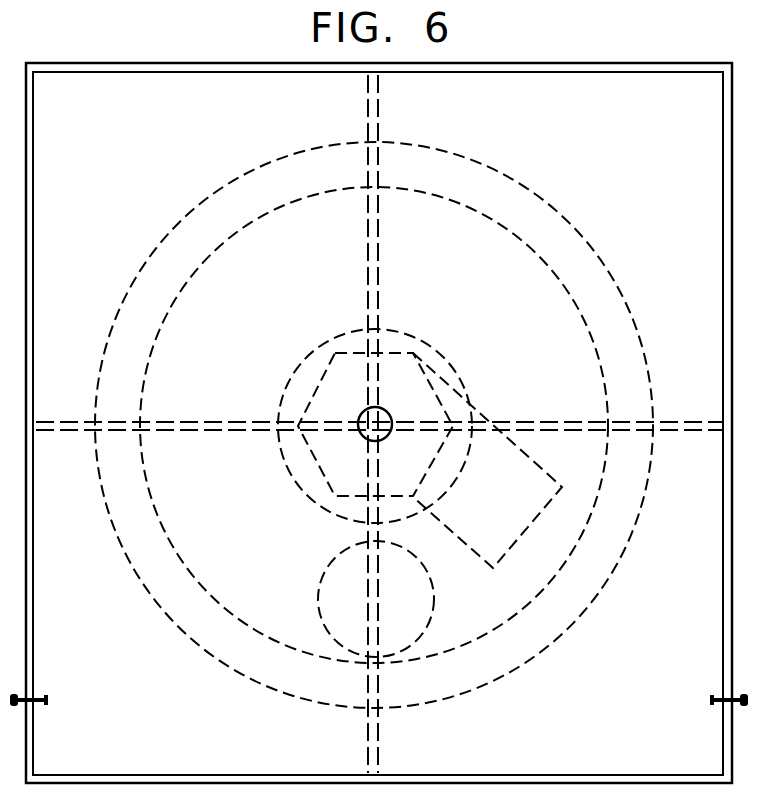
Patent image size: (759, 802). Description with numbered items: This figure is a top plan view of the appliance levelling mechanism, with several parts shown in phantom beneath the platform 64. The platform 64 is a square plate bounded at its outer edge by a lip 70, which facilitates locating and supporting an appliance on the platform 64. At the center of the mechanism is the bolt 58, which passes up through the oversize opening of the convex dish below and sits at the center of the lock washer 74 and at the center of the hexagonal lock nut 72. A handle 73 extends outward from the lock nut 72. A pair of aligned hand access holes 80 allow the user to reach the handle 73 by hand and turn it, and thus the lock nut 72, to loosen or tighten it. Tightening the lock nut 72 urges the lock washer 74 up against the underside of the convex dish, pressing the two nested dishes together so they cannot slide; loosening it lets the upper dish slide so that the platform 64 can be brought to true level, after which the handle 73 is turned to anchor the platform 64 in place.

The bolt 58 is at (362, 437).
The platform 64 is at (606, 722).
The lip 70 is at (723, 630).
The lock nut 72 is at (325, 371).
The handle 73 is at (475, 556).
The lock washer 74 is at (403, 333).
The hand access holes 80 is at (325, 572).